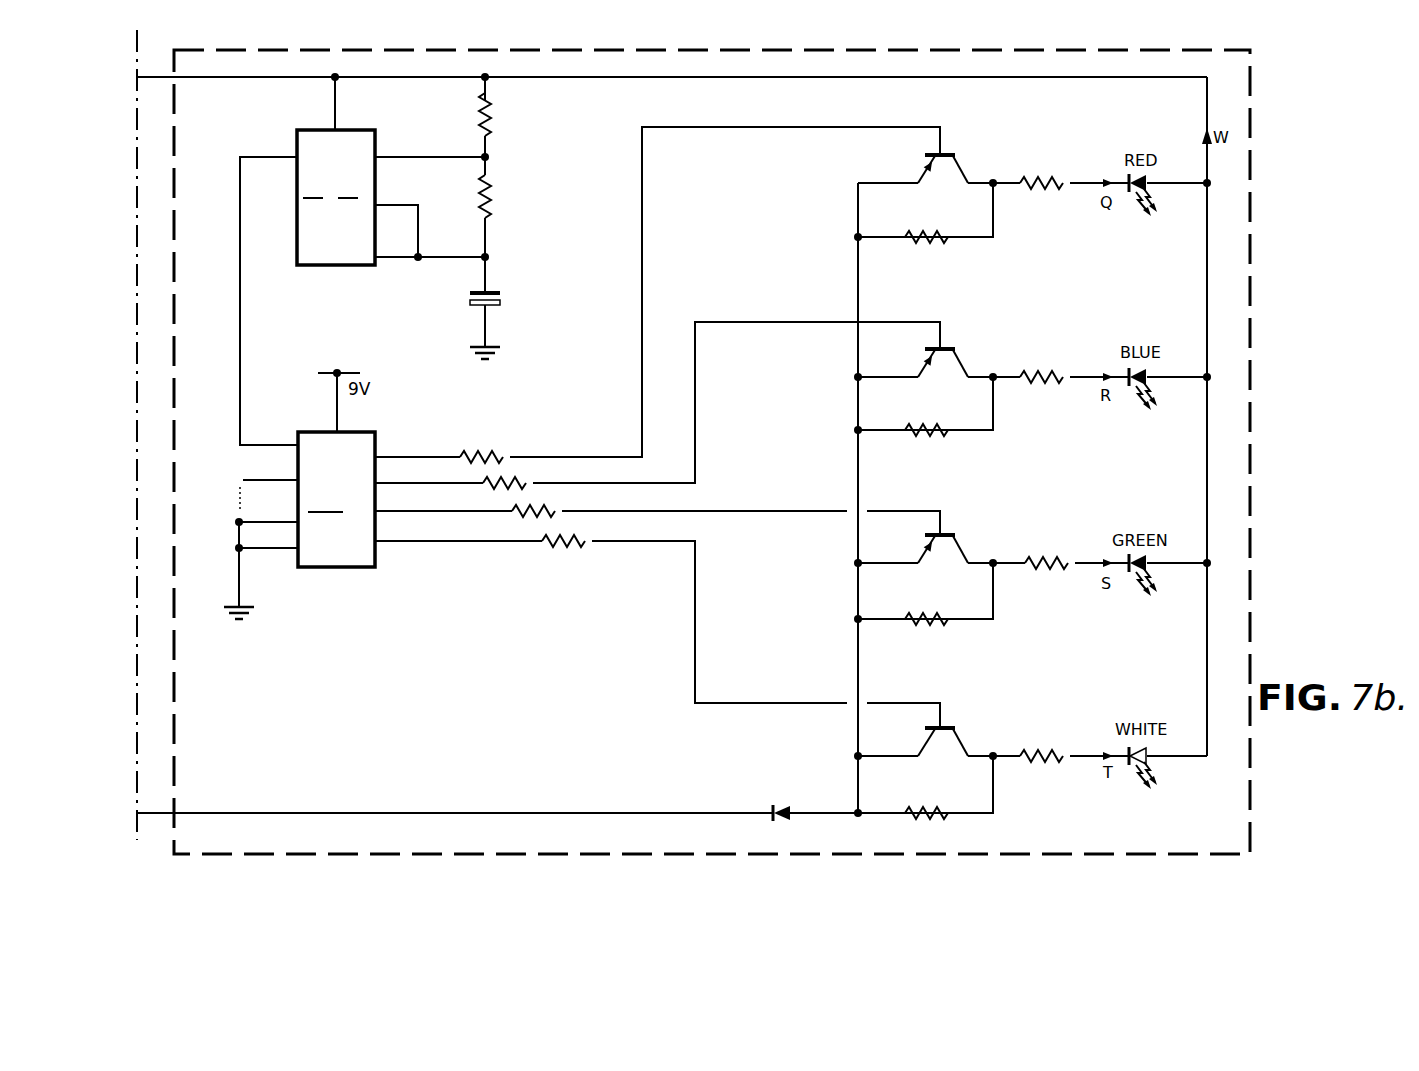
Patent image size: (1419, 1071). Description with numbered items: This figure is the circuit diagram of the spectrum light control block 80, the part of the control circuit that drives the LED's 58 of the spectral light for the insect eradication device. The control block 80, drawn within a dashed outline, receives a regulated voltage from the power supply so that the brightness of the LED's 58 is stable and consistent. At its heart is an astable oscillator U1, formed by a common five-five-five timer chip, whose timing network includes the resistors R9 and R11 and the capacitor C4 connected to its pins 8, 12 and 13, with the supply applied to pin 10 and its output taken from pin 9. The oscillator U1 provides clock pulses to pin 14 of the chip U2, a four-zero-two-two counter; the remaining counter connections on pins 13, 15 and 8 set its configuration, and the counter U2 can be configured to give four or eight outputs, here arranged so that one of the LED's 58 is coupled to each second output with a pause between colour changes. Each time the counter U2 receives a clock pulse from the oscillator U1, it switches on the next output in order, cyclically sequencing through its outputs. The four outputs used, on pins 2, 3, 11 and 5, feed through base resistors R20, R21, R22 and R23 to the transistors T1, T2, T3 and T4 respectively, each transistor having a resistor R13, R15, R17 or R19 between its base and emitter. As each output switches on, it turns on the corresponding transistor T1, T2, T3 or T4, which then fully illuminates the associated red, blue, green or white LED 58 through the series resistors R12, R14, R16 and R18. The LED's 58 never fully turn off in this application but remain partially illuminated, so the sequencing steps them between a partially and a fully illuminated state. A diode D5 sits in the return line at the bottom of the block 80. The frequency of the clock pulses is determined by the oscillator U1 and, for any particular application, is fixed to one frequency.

The spectrum light control block 80 is at (1252, 279).
The LED 58 is at (1126, 224).
The astable oscillator U1 is at (338, 280).
The counter U2 is at (336, 499).
The capacitor C4 is at (504, 308).
The diode D5 is at (778, 799).
The resistor R9 is at (499, 117).
The resistor R11 is at (503, 207).
The resistor R12 is at (1041, 174).
The resistor R13 is at (923, 226).
The resistor R14 is at (1041, 368).
The resistor R15 is at (923, 419).
The resistor R16 is at (1046, 554).
The resistor R17 is at (923, 607).
The resistor R18 is at (1045, 771).
The resistor R19 is at (923, 800).
The resistor R20 is at (700, 295).
The resistor R21 is at (711, 405).
The resistor R22 is at (726, 511).
The resistor R23 is at (741, 621).
The transistor T1 is at (939, 168).
The transistor T2 is at (937, 363).
The transistor T3 is at (939, 549).
The transistor T4 is at (937, 739).
The U2 pin 2 is at (417, 447).
The U2 pin 3 is at (429, 473).
The U2 pin 5 is at (458, 531).
The pin 8 is at (364, 400).
The U1 pin 9 is at (269, 290).
The U1 pin 10 is at (346, 103).
The U2 pin 11 is at (443, 501).
The U1 pin 12 is at (396, 221).
The pin 13 is at (366, 308).
The pin 14 of chip U2 14 is at (282, 435).
The U2 pin 15 is at (268, 512).